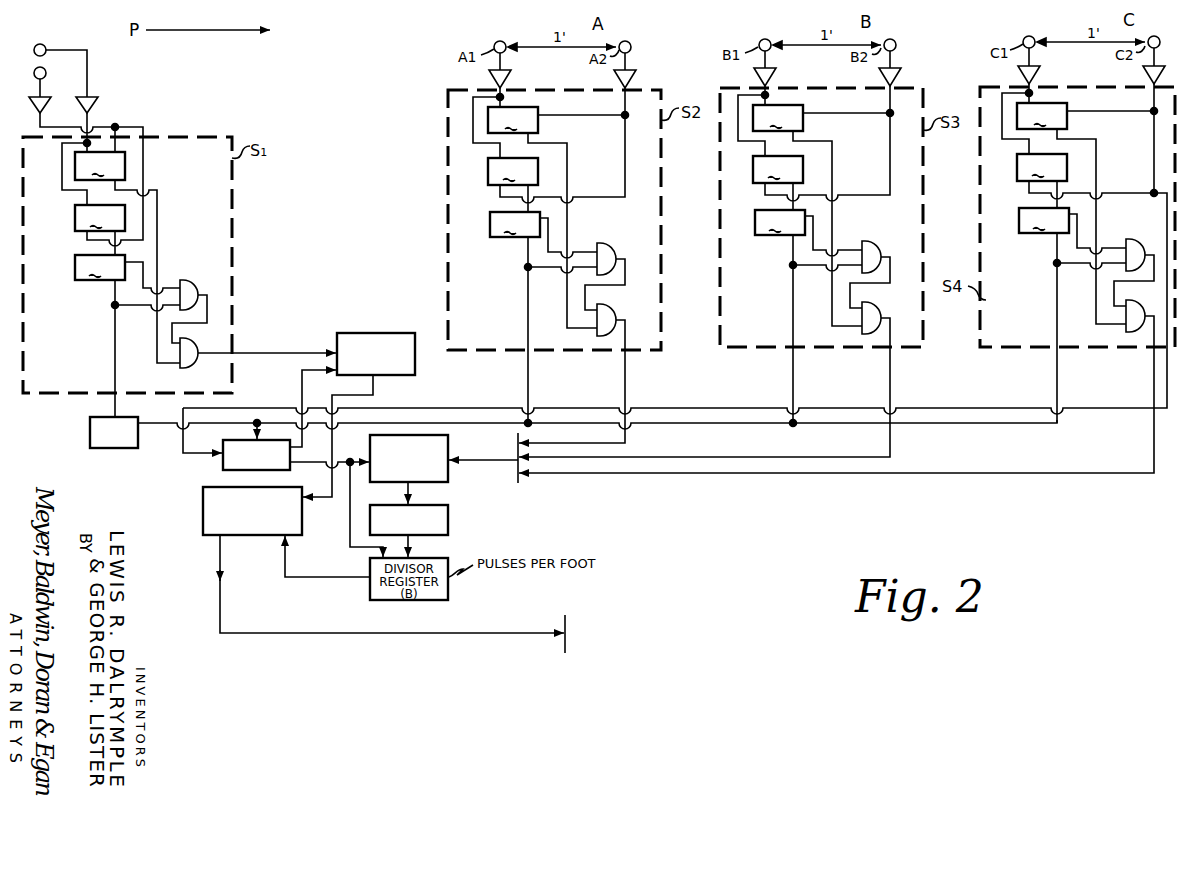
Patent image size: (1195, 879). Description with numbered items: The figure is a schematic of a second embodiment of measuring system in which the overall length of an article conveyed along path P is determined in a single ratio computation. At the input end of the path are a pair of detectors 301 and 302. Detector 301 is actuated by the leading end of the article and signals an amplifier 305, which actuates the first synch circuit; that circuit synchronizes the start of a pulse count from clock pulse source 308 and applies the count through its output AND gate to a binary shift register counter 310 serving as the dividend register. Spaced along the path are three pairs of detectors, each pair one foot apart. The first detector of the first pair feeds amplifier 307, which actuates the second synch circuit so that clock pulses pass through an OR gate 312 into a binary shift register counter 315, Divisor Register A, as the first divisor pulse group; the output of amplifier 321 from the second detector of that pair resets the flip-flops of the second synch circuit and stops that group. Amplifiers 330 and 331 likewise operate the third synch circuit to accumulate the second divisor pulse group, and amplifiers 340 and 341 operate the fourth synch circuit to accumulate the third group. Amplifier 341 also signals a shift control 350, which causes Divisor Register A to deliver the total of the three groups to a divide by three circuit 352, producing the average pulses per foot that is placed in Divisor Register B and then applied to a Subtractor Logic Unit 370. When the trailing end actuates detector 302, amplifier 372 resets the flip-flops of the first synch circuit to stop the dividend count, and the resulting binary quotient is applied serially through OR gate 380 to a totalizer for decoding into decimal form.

The detector 301 is at (46, 46).
The detector 302 is at (54, 67).
The amplifier 305 is at (99, 101).
The amplifier 372 is at (49, 103).
The amplifier 307 is at (491, 79).
The amplifier 321 is at (616, 79).
The amplifier 330 is at (756, 77).
The amplifier 331 is at (881, 77).
The amplifier 340 is at (1020, 74).
The amplifier 341 is at (1144, 74).
The clock pulse source 308 is at (90, 436).
The binary shift register counter (Dividend) 310 is at (337, 345).
The OR gate 312 is at (518, 483).
The binary shift register counter (Divisor Register A) 315 is at (448, 450).
The shift control 350 is at (223, 465).
The divide by three circuit 352 is at (449, 521).
The Subtractor Logic Unit 370 is at (203, 530).
The OR gate 380 is at (566, 626).